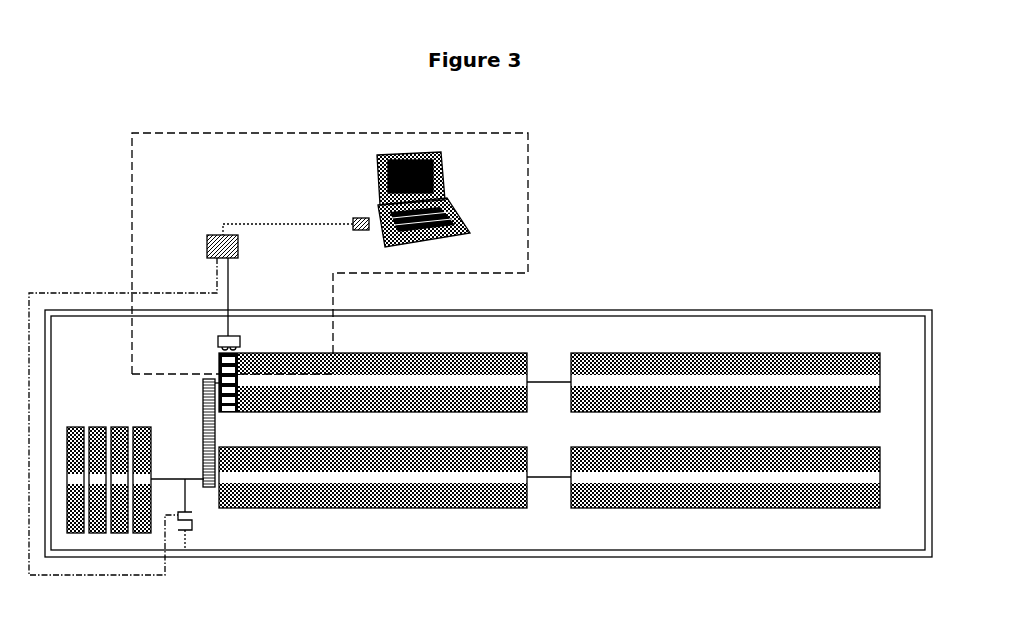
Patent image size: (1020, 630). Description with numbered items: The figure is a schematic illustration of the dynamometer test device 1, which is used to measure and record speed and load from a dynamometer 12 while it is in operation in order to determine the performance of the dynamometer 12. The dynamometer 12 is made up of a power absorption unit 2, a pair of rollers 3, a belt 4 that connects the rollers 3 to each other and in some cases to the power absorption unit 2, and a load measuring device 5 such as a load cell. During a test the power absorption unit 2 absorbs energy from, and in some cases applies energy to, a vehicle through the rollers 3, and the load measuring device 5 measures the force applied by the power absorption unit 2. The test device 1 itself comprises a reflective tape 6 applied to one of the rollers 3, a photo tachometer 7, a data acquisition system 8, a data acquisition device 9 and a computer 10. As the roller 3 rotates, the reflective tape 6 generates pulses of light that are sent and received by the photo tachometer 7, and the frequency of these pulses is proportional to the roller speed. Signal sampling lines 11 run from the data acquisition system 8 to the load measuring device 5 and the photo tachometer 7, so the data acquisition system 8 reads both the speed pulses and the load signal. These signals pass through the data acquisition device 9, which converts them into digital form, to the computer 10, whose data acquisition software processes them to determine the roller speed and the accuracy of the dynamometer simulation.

The dynamometer test device 1 is at (528, 205).
The power absorption unit 2 is at (98, 422).
The rollers 3 is at (688, 347).
The belt 4 is at (218, 426).
The load measuring device 5 is at (200, 523).
The reflective tape 6 is at (220, 359).
The photo tachometer 7 is at (245, 341).
The data acquisition system 8 is at (207, 245).
The data acquisition device 9 is at (362, 210).
The computer 10 is at (450, 177).
The signal sampling lines 11 is at (216, 279).
The dynamometer 12 is at (503, 559).